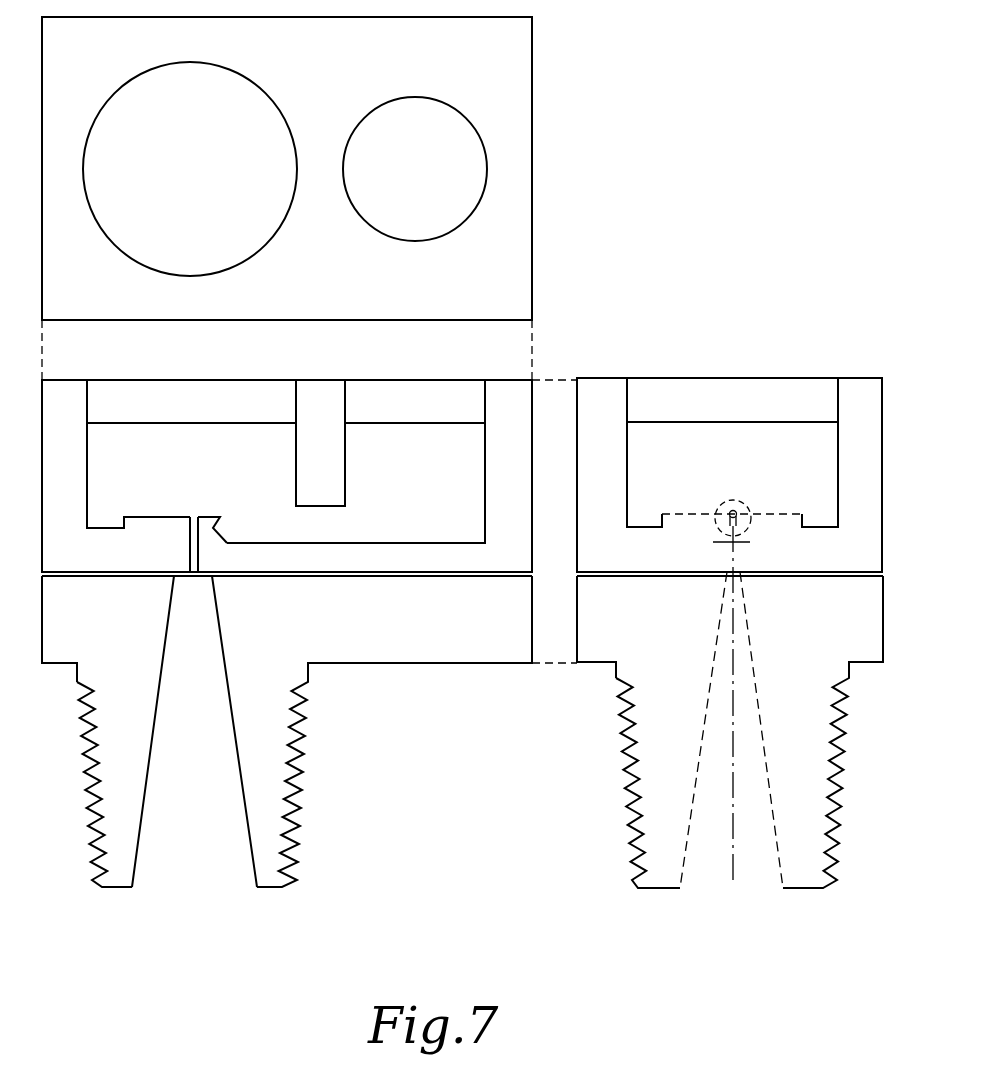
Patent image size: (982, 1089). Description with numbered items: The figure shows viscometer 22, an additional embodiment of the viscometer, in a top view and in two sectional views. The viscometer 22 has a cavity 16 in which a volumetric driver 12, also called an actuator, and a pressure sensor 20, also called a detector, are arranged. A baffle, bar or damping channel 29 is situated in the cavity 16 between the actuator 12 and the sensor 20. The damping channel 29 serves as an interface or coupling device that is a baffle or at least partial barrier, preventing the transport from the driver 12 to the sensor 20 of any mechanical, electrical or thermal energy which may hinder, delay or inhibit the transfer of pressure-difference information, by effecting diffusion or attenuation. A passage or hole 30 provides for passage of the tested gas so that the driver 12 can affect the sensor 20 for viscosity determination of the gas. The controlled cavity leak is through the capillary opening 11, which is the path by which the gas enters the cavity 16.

In FIG. 7a, the capillary opening 11 is at (192, 576).
In FIG. 7b, the capillary opening 11 is at (737, 550).
In FIG. 7, the volumetric driver 12 is at (238, 100).
In FIG. 7a, the volumetric driver 12 is at (173, 393).
In FIG. 7b, the volumetric driver 12 is at (708, 388).
In FIG. 7a, the cavity 16 is at (156, 478).
In FIG. 7b, the cavity 16 is at (681, 468).
In FIG. 7, the pressure sensor 20 is at (398, 225).
In FIG. 7a, the pressure sensor 20 is at (405, 393).
In FIG. 7, the viscometer 22 is at (722, 134).
In FIG. 7a, the damping channel 29 is at (303, 465).
In FIG. 7a, the passage 30 is at (336, 541).
In FIG. 7b, the passage 30 is at (737, 503).